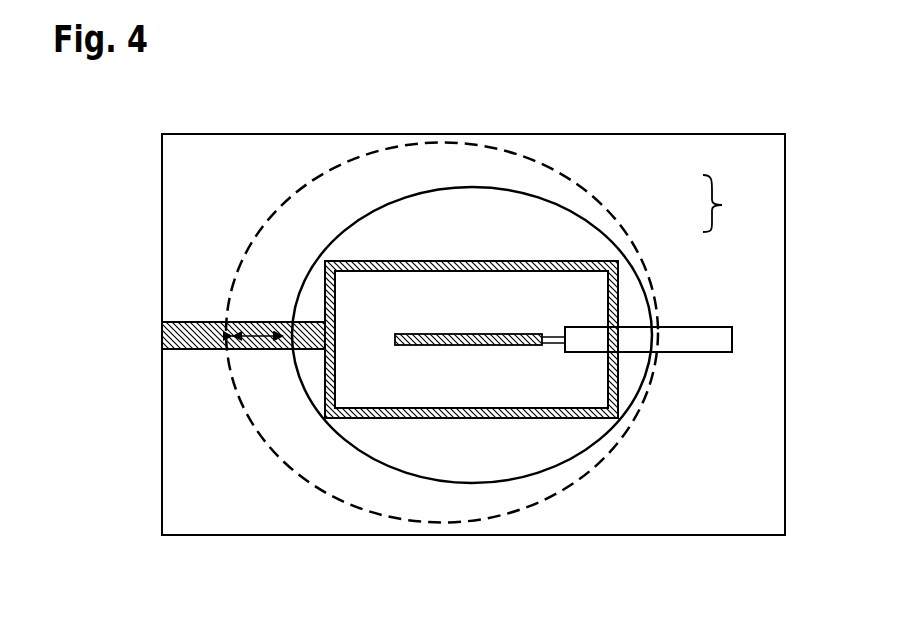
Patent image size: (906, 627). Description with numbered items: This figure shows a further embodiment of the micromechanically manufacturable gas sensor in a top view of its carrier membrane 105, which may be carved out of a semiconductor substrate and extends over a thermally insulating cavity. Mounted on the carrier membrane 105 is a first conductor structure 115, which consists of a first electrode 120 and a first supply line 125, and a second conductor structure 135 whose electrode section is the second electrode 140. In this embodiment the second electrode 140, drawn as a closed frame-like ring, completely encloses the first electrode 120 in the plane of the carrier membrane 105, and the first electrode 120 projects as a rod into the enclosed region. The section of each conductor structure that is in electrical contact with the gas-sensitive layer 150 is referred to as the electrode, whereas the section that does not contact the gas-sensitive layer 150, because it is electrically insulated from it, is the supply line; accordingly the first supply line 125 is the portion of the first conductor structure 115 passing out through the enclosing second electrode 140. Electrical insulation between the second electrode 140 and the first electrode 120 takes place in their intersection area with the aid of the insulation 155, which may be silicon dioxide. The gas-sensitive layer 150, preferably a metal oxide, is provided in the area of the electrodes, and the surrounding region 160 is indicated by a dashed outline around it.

The carrier membrane 105 is at (178, 155).
The outer field region 160 is at (326, 171).
The gas-sensitive layer 150 is at (486, 200).
The first electrode 120 is at (515, 332).
The first supply line 125 is at (674, 324).
The first conductor structure 115 is at (737, 203).
The insulation 155 is at (712, 335).
The second conductor structure 135 is at (176, 317).
The second electrode 140 is at (257, 336).